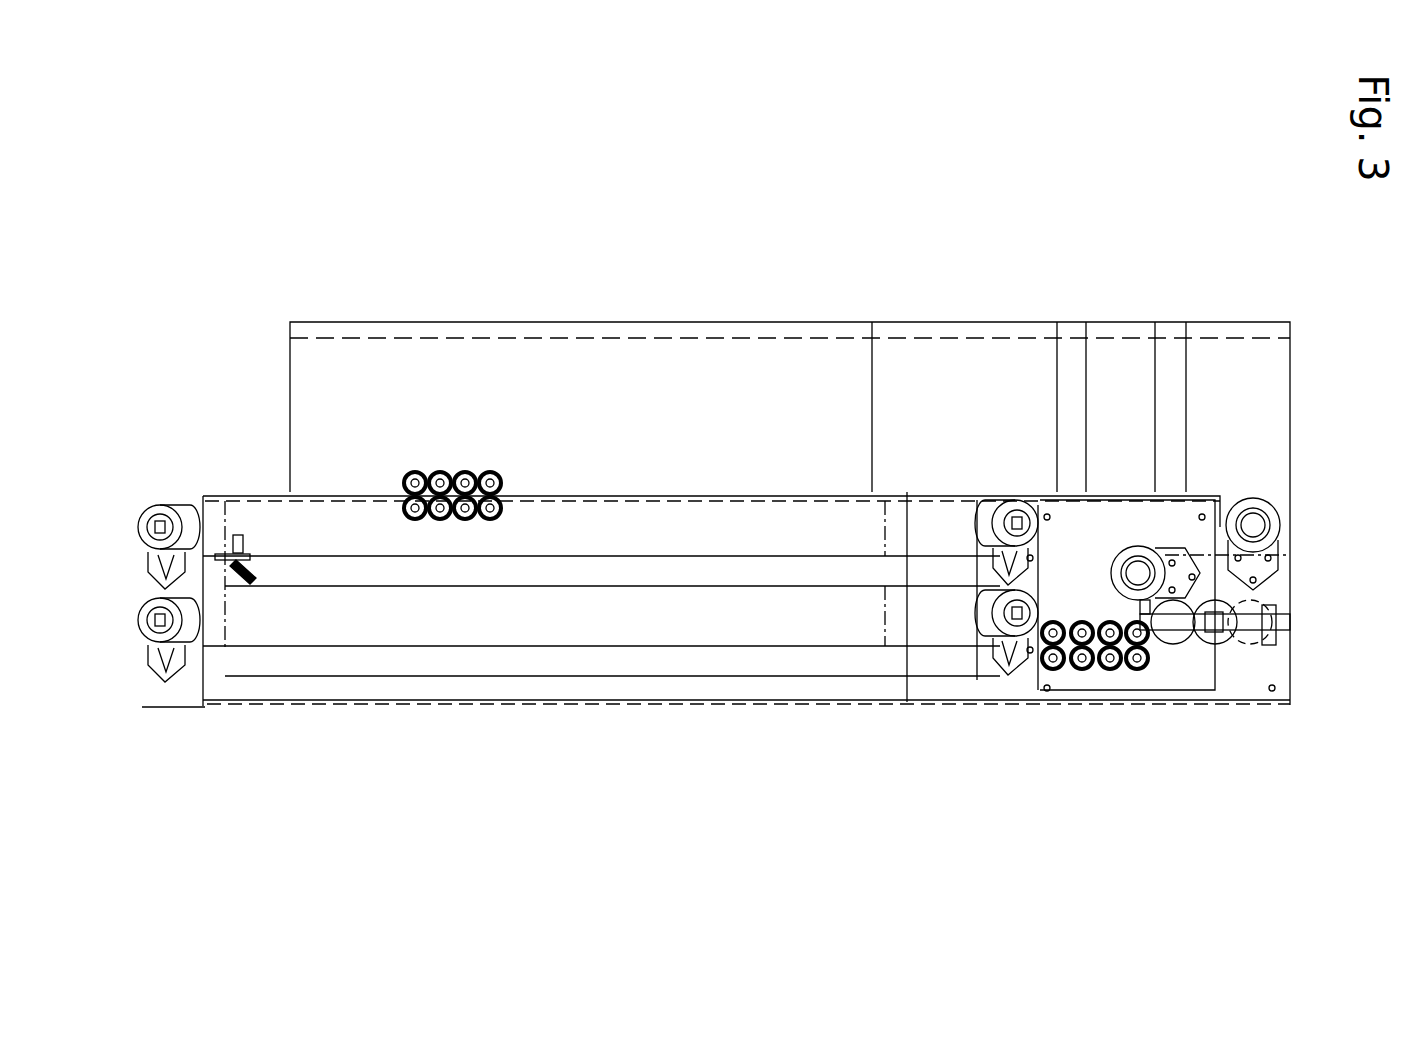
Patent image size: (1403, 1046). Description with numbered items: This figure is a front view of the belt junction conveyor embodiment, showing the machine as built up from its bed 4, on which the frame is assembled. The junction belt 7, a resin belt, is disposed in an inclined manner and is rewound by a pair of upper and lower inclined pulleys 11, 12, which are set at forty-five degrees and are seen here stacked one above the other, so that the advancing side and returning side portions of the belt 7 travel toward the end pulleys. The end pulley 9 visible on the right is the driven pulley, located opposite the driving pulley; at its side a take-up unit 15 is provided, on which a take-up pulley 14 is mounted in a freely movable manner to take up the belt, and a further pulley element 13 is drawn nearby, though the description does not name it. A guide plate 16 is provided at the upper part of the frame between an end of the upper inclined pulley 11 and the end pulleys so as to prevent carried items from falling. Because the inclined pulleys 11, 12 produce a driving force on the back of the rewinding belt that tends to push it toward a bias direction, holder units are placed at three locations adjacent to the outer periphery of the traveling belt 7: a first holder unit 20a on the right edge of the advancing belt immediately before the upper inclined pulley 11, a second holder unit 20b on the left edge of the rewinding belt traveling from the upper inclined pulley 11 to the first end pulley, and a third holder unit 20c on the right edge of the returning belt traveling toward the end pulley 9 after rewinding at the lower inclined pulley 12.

The bed 4 is at (960, 697).
The junction belt 7 is at (1115, 494).
The end pulley 9 is at (1275, 520).
The upper inclined pulley 11 is at (627, 530).
The lower inclined pulley 12 is at (627, 630).
The roller 13 is at (1125, 570).
The take-up pulley 14 is at (1220, 645).
The take-up unit 15 is at (1197, 660).
The guide plate 16 is at (743, 362).
The first holder unit 20a is at (455, 465).
The second holder unit 20b is at (253, 545).
The third holder unit 20c is at (1095, 672).